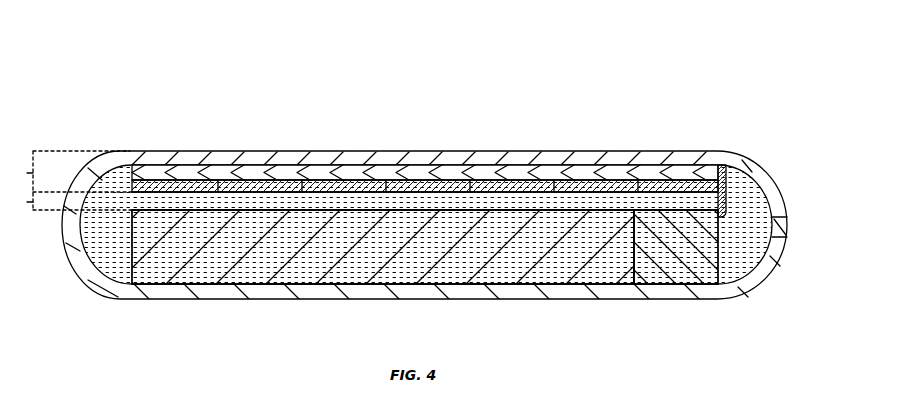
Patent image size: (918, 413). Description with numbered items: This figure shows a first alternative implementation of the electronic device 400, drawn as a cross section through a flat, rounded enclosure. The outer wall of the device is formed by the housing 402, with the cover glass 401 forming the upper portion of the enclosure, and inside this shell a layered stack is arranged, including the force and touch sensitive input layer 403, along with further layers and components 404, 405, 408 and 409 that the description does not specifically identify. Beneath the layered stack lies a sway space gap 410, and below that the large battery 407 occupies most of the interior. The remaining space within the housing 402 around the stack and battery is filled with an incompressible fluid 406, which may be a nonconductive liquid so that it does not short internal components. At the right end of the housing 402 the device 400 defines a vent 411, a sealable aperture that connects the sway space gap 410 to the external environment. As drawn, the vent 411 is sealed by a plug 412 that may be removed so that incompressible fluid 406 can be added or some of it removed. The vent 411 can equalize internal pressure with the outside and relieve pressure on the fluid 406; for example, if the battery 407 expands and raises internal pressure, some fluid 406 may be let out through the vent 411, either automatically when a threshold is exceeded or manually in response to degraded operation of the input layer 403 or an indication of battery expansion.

The electronic device 400 is at (106, 84).
The cover glass 401 is at (222, 151).
The housing 402 is at (783, 181).
The force and touch sensitive input layer 403 is at (67, 180).
The display cover layer 404 is at (346, 172).
The display layer 405 is at (518, 183).
The incompressible fluid 406 is at (78, 222).
The battery 407 is at (344, 285).
The circuitry block 408 is at (686, 285).
The flexible connector 409 is at (725, 190).
The sway space gap 410 is at (360, 201).
The vent 411 is at (798, 234).
The plug 412 is at (790, 226).